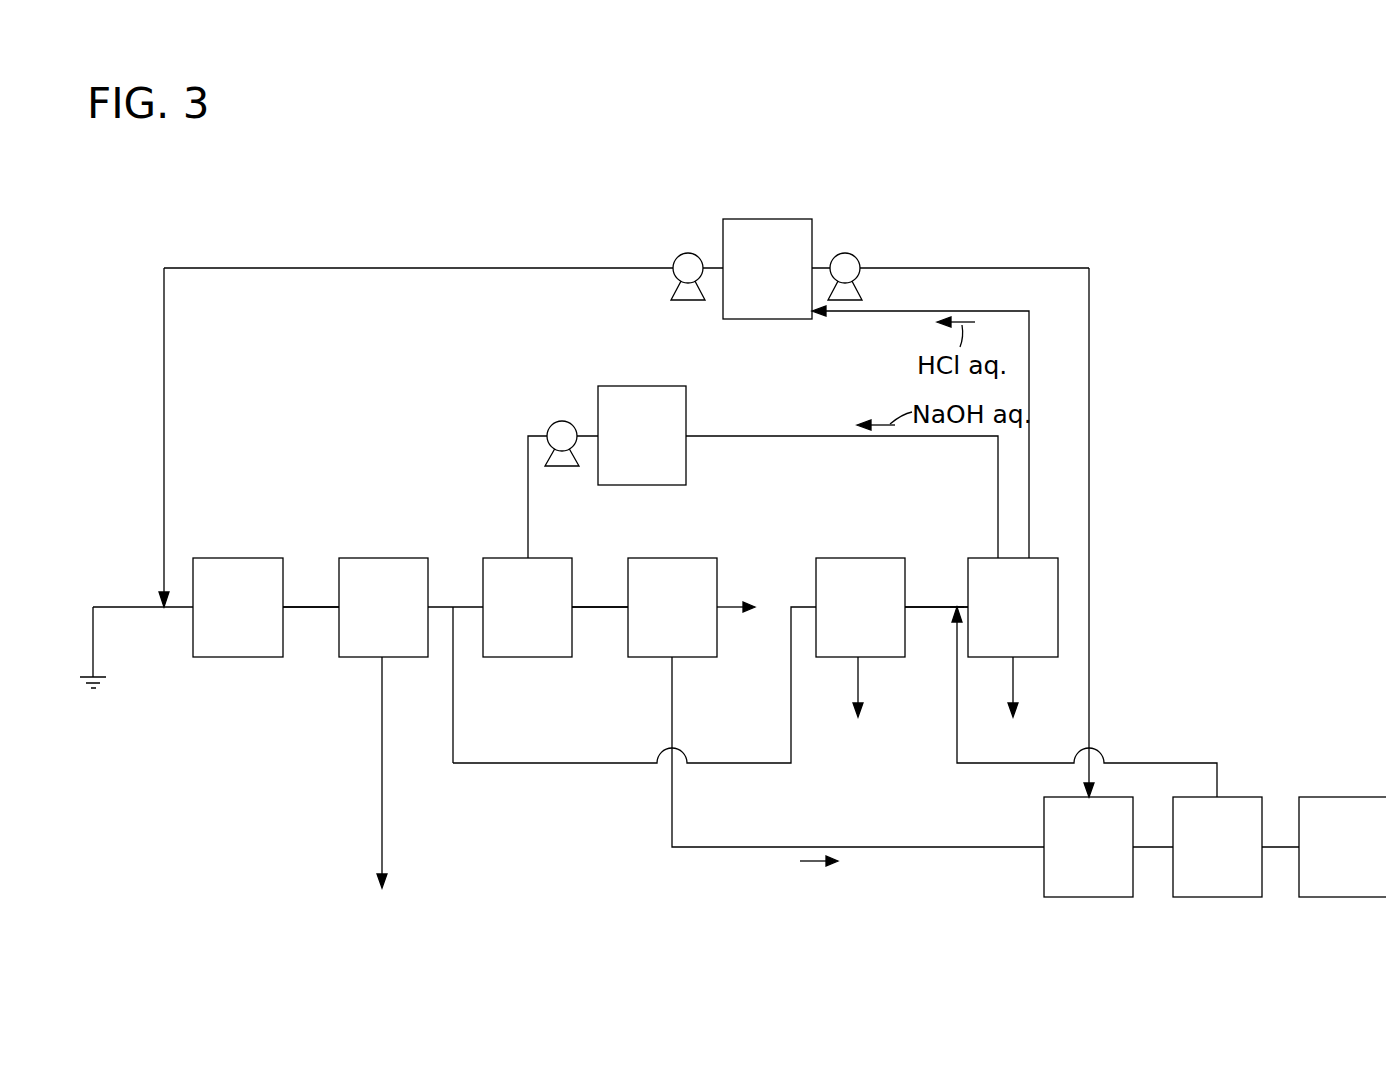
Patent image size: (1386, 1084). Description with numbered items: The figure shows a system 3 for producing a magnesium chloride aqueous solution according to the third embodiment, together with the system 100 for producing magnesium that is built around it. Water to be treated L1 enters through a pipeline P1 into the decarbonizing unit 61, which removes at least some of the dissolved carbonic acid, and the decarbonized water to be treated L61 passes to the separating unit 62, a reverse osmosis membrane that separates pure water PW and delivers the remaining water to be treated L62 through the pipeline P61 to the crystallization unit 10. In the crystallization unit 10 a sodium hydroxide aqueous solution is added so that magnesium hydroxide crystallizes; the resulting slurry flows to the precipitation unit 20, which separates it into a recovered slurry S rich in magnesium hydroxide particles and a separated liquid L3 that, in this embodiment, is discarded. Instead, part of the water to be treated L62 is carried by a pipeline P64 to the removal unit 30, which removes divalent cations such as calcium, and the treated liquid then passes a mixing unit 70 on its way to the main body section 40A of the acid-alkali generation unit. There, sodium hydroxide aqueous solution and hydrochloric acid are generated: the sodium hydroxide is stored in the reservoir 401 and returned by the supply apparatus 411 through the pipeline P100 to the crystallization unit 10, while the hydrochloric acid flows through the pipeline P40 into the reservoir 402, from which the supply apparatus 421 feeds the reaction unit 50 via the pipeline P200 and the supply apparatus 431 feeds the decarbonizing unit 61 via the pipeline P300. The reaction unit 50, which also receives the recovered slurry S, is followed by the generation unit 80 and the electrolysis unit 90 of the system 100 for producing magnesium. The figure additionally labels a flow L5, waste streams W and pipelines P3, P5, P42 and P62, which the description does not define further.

The system for producing magnesium chloride aqueous solution 3 is at (314, 812).
The crystallization unit 10 is at (504, 556).
The precipitation unit 20 is at (672, 556).
The removal unit 30 is at (858, 556).
The main body section 40A is at (1046, 556).
The reaction unit 50 is at (1044, 880).
The decarbonizing unit 61 is at (233, 556).
The separating unit 62 is at (384, 556).
The mixing unit 70 is at (957, 604).
The generation unit 80 is at (1245, 795).
The electrolysis unit 90 is at (1343, 795).
The system for producing magnesium 100 is at (1275, 664).
The reservoir 401 is at (641, 384).
The reservoir 402 is at (767, 217).
The supply apparatus 411 is at (560, 420).
The supply apparatus 421 is at (848, 252).
The supply apparatus 431 is at (687, 252).
The water to be treated L1 is at (132, 596).
The separated liquid L3 is at (606, 596).
The treated water L5 is at (935, 596).
The water to be treated L61 is at (316, 596).
The water to be treated L62 is at (460, 596).
The pipeline P1 is at (97, 615).
The pipe P3 is at (598, 609).
The pipe P5 is at (925, 609).
The pipeline P40 is at (913, 308).
The pipe P42 is at (675, 706).
The pipeline P61 is at (308, 609).
The pipe P62 is at (442, 610).
The pipeline P64 is at (553, 766).
The pipeline P100 is at (765, 434).
The pipeline P200 is at (1090, 408).
The pipeline P300 is at (457, 266).
The recovered slurry S is at (815, 864).
The waste water W is at (935, 699).
The pure water PW is at (383, 788).